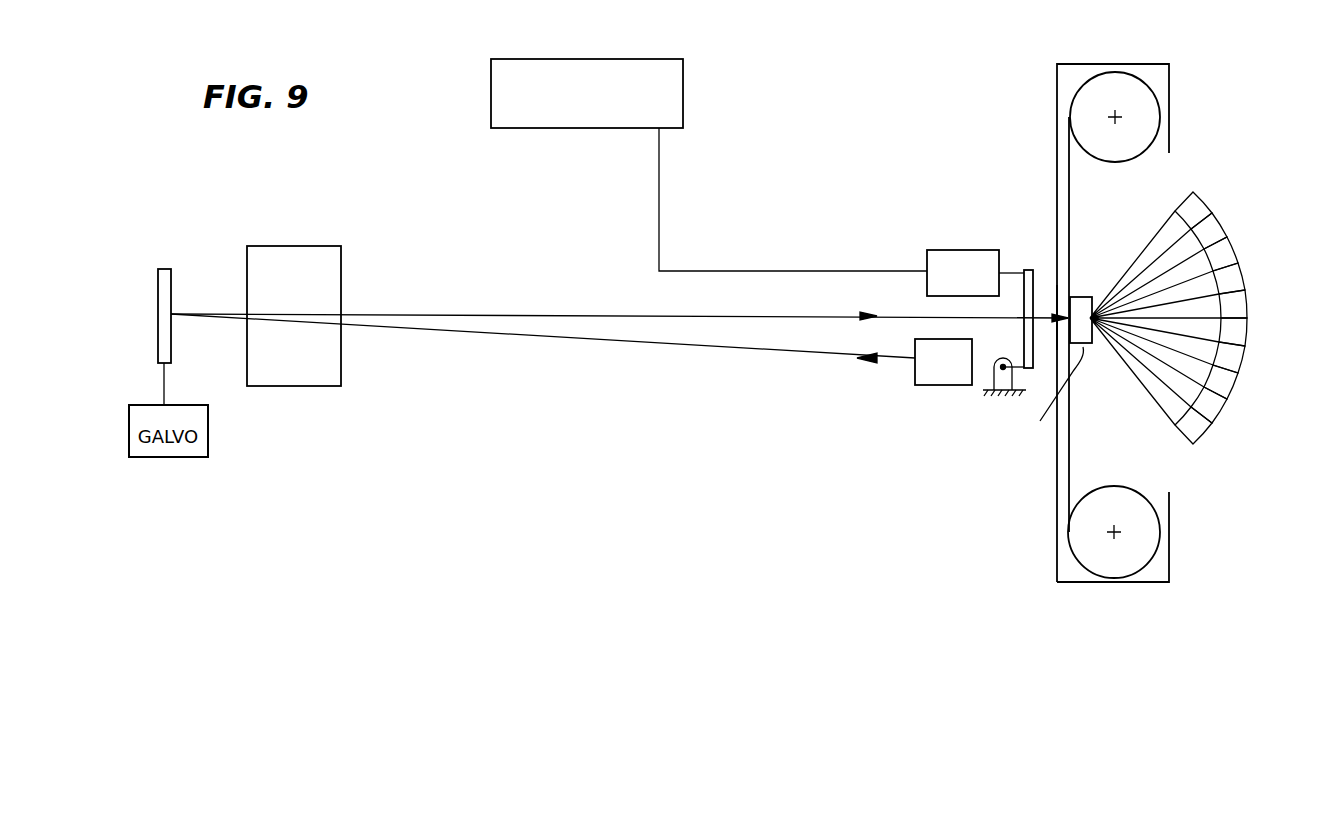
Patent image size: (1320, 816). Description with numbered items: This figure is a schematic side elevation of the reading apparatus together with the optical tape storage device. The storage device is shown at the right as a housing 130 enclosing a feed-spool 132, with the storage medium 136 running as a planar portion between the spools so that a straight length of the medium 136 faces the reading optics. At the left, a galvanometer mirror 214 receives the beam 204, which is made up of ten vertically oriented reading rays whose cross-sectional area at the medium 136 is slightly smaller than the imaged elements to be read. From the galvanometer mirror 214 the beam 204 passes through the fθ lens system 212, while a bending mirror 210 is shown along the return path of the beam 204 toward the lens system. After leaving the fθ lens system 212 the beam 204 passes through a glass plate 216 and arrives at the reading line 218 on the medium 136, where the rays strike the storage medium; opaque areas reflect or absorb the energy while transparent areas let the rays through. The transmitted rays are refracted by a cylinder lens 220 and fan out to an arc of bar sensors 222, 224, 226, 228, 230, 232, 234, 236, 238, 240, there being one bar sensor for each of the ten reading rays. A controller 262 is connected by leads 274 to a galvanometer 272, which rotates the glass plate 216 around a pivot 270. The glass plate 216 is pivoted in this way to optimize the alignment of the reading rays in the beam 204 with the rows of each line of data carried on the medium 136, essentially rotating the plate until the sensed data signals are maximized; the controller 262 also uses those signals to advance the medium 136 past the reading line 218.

The housing 130 is at (1057, 548).
The feed-spool 132 is at (1108, 487).
The storage medium 136 is at (1069, 443).
The beam 204 is at (730, 317).
The bending mirror 210 is at (933, 385).
The fθ lens system 212 is at (341, 283).
The galvanometer mirror 214 is at (158, 283).
The glass plate 216 is at (1030, 270).
The reading line 218 is at (1062, 300).
The cylinder lens 220 is at (1081, 297).
The bar sensor 222 is at (1203, 202).
The bar sensor 224 is at (1220, 224).
The bar sensor 226 is at (1233, 249).
The bar sensor 228 is at (1242, 276).
The bar sensor 230 is at (1246, 304).
The bar sensor 232 is at (1246, 332).
The bar sensor 234 is at (1242, 360).
The bar sensor 236 is at (1233, 387).
The bar sensor 238 is at (1220, 412).
The bar sensor 240 is at (1203, 434).
The controller 262 is at (578, 59).
The pivot 270 is at (1003, 358).
The galvanometer 272 is at (950, 250).
The leads 274 is at (790, 271).